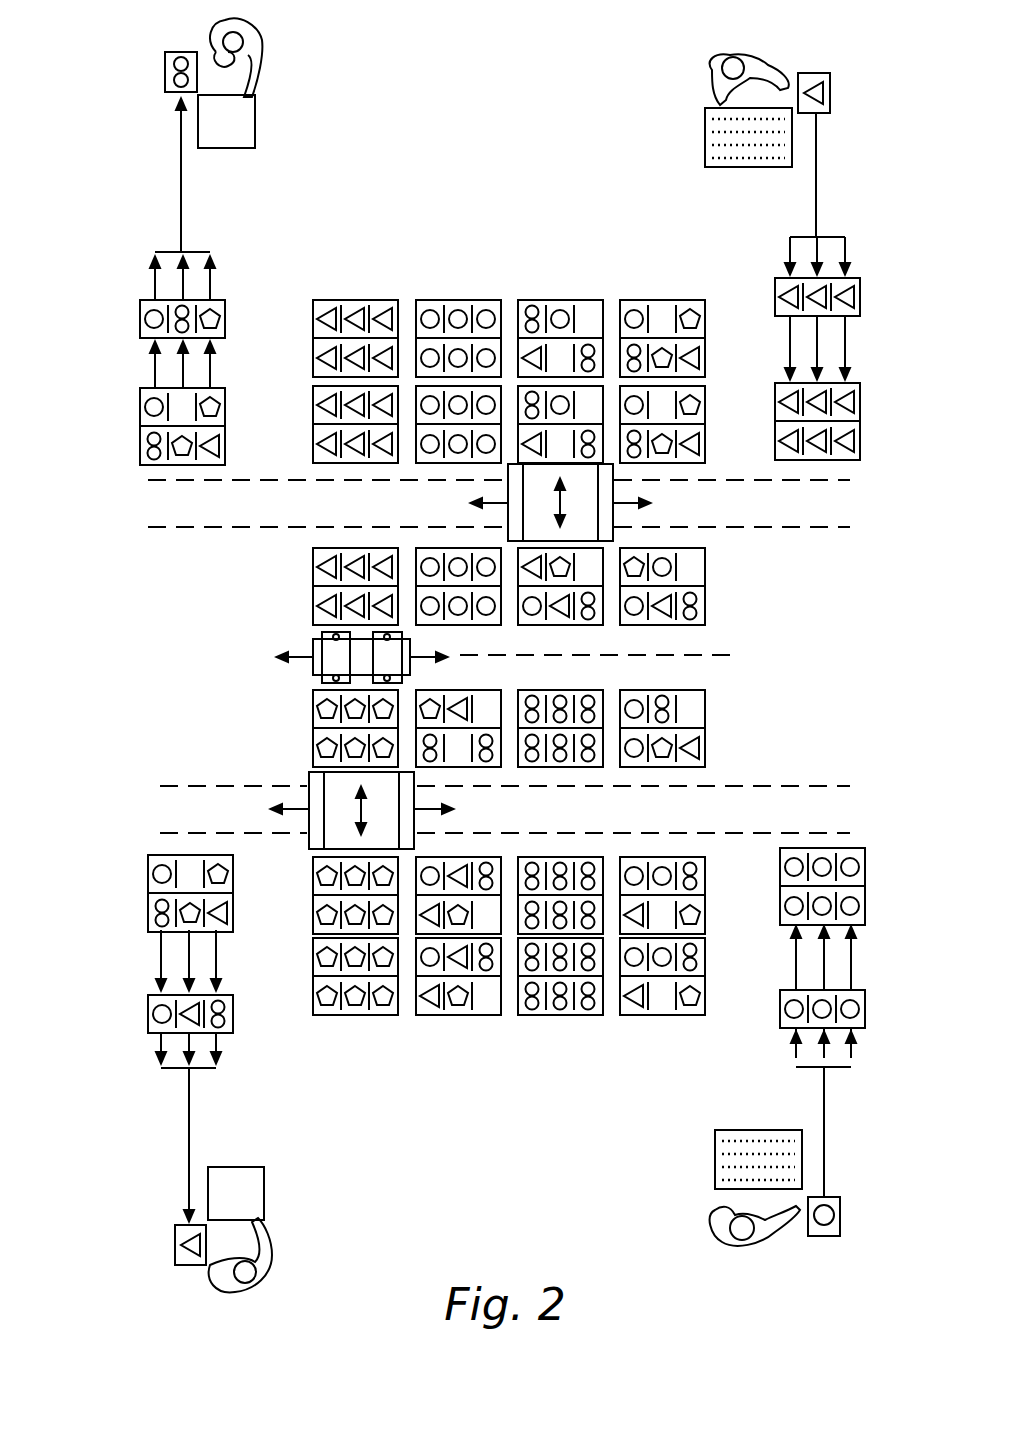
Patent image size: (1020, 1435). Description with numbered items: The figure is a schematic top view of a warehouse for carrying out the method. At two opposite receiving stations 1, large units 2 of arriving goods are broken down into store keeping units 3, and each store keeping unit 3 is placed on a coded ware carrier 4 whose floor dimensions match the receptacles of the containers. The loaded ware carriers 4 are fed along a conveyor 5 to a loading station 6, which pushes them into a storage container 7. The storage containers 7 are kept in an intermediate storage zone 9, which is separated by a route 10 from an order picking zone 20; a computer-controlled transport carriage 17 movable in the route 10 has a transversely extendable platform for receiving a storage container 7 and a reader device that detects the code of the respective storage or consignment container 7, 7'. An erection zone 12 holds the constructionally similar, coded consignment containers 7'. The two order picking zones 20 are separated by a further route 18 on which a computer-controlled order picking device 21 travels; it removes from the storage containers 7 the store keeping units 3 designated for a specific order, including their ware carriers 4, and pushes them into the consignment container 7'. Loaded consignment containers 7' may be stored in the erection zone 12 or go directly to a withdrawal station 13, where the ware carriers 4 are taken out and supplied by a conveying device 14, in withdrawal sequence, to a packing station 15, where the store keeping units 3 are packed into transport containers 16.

The receiving station 1 is at (714, 1245).
The large unit 2 is at (718, 1165).
The store keeping unit 3 is at (178, 52).
The ware carrier 4 is at (165, 72).
The conveyor 5 is at (824, 1140).
The loading station 6 is at (863, 990).
The storage container 7 is at (488, 889).
The consignment container 7' is at (431, 870).
The intermediate storage zone 9 is at (573, 1043).
The route 10 is at (820, 505).
The erection zone 12 is at (549, 286).
The withdrawal station 13 is at (236, 315).
The conveying device 14 is at (183, 180).
The packing station 15 is at (283, 52).
The transport container 16 is at (240, 125).
The transport carriage 17 is at (590, 515).
The route 18 is at (665, 673).
The order picking zone 20 is at (290, 573).
The order picking device 21 is at (320, 668).